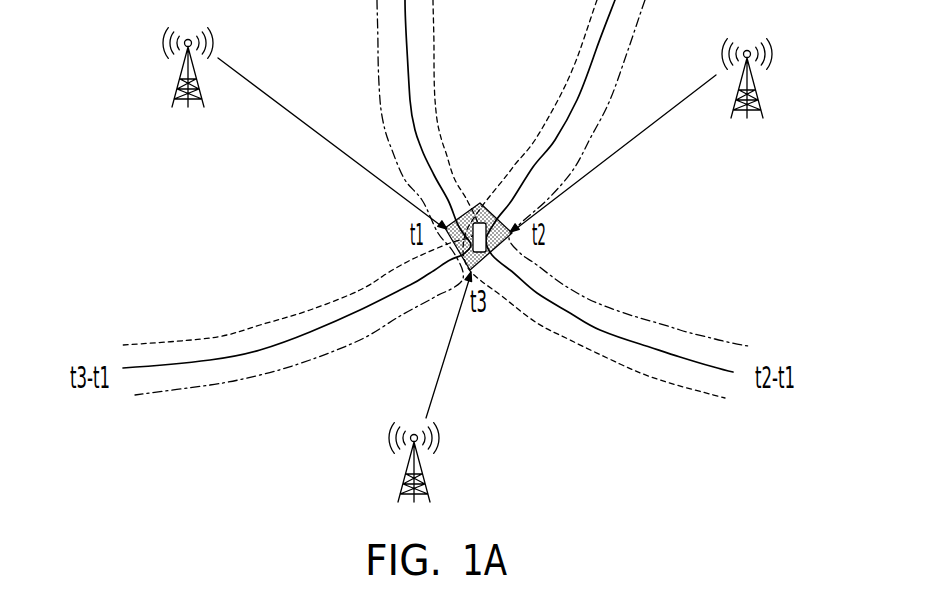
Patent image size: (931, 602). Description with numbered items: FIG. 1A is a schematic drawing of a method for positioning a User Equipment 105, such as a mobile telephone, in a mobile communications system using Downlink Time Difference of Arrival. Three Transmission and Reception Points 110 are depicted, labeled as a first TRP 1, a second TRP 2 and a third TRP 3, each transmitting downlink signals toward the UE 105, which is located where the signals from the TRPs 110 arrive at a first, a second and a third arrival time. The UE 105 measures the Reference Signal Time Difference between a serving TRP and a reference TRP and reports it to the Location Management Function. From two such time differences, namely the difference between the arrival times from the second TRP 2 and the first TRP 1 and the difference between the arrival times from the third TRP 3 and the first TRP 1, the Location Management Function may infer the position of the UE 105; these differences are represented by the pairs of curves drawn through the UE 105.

The User Equipment (UE) 105 is at (476, 200).
The Transmission and Reception Point (TRP) 110 is at (468, 277).
The first transmission reception point (TRP1) 1 is at (188, 96).
The second transmission reception point (TRP2) 2 is at (746, 106).
The third transmission reception point (TRP3) 3 is at (437, 474).